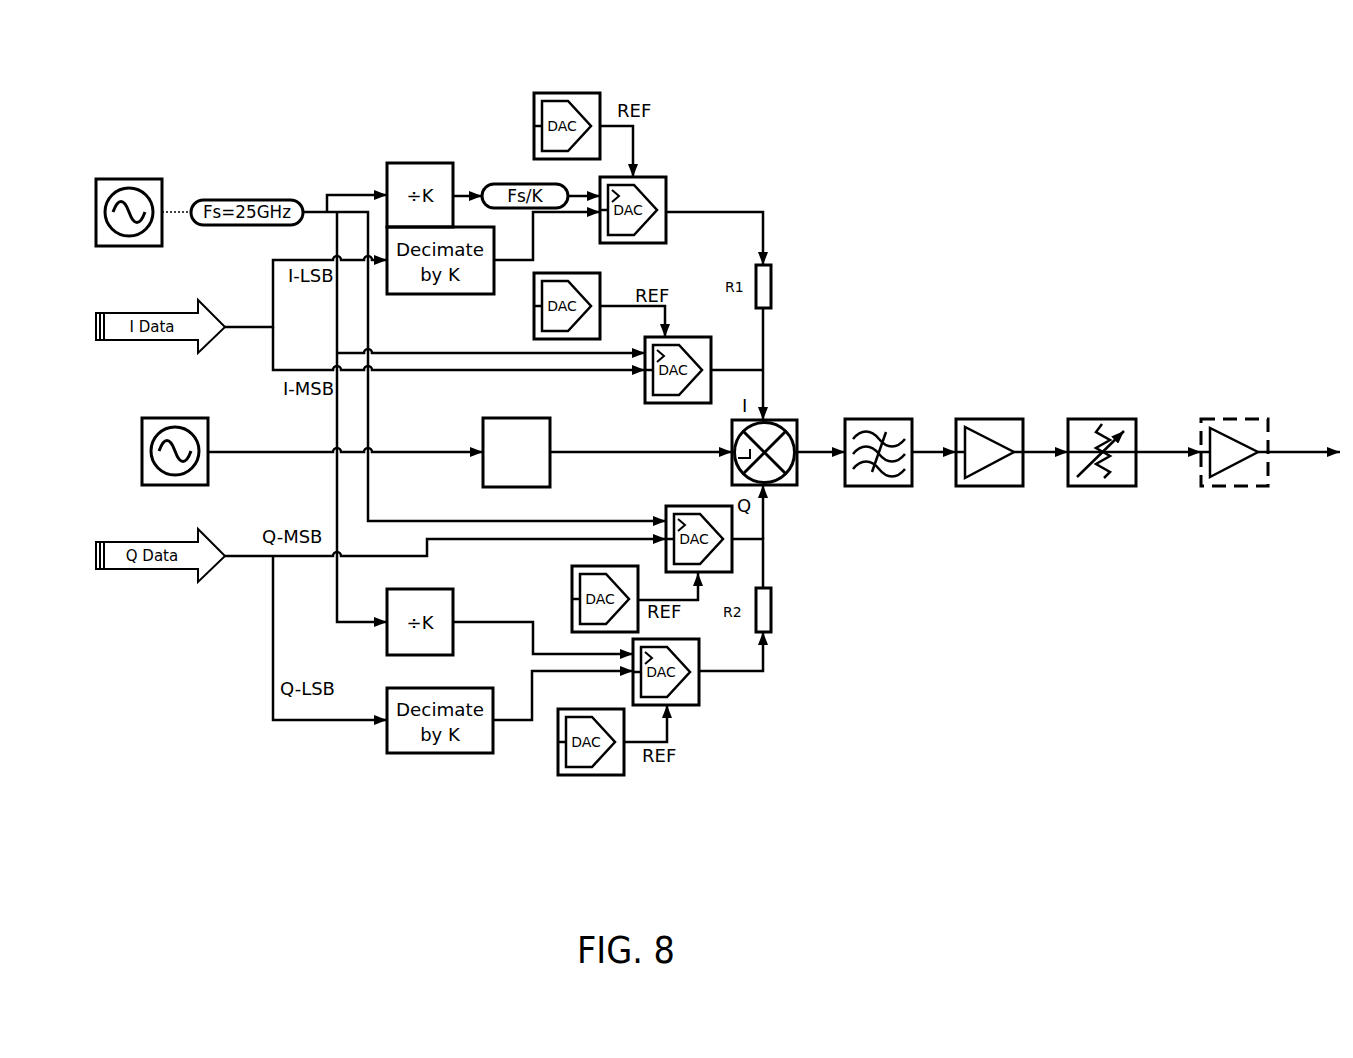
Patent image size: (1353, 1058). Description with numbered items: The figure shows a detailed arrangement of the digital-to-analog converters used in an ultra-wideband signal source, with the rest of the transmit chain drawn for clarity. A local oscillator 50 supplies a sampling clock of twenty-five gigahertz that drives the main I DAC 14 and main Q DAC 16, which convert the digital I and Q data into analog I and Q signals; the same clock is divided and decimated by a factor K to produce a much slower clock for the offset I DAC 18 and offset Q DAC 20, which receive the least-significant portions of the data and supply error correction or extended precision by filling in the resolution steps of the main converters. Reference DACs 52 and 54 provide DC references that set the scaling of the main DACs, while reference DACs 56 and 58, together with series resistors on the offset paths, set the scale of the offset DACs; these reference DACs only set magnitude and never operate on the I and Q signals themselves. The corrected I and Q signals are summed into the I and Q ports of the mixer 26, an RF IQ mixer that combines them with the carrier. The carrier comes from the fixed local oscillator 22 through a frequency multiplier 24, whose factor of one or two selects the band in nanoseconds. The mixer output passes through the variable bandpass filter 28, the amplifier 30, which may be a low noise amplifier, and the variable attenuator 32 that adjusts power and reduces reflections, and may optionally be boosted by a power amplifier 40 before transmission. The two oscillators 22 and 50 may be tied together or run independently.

The local oscillator 50 is at (143, 179).
The reference DAC 56 is at (533, 93).
The offset I DAC 18 is at (660, 177).
The reference DAC 52 is at (534, 331).
The main I DAC 14 is at (678, 337).
The main Q DAC 16 is at (687, 505).
The reference DAC 54 is at (571, 584).
The offset Q DAC 20 is at (699, 695).
The reference DAC 58 is at (624, 770).
The local oscillator 22 is at (160, 418).
The frequency multiplier 24 is at (502, 418).
The mixer 26 is at (797, 419).
The bandpass filter 28 is at (888, 419).
The amplifier 30 is at (1005, 419).
The variable attenuator 32 is at (1101, 419).
The power amplifier 40 is at (1238, 419).